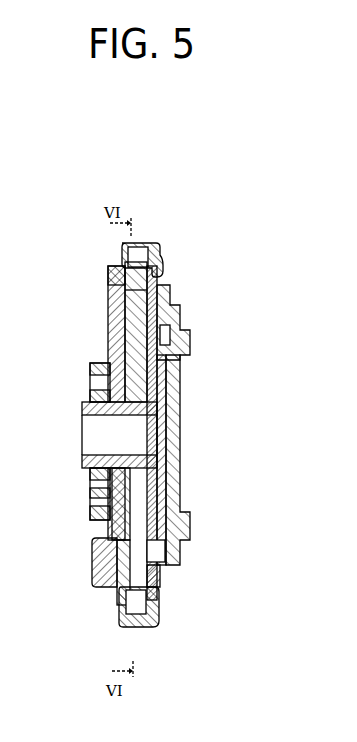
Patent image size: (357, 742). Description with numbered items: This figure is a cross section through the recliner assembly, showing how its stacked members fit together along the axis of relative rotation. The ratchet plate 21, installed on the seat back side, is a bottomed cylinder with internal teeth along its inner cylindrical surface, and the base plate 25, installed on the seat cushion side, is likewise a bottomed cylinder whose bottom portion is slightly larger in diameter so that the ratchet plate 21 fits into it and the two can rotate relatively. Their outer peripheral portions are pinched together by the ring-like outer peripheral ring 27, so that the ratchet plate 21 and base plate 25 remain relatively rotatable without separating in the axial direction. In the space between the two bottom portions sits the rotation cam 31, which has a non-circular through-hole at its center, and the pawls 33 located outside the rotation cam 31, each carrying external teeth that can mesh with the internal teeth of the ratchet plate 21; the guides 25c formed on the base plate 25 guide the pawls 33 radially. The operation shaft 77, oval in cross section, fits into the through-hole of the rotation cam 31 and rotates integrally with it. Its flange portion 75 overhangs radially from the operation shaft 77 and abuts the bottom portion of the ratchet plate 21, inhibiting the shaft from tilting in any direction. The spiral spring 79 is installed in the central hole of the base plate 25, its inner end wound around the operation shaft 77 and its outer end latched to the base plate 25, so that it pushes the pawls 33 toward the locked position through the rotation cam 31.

The outer peripheral ring 27 is at (147, 246).
The base plate 25 is at (110, 283).
The guide 25c is at (179, 308).
The spiral spring 79 is at (89, 366).
The flange portion 75 is at (158, 383).
The operation shaft 77 is at (82, 457).
The rotation cam 31 is at (159, 472).
The ratchet plate 21 is at (179, 500).
The pawl 33 is at (160, 557).